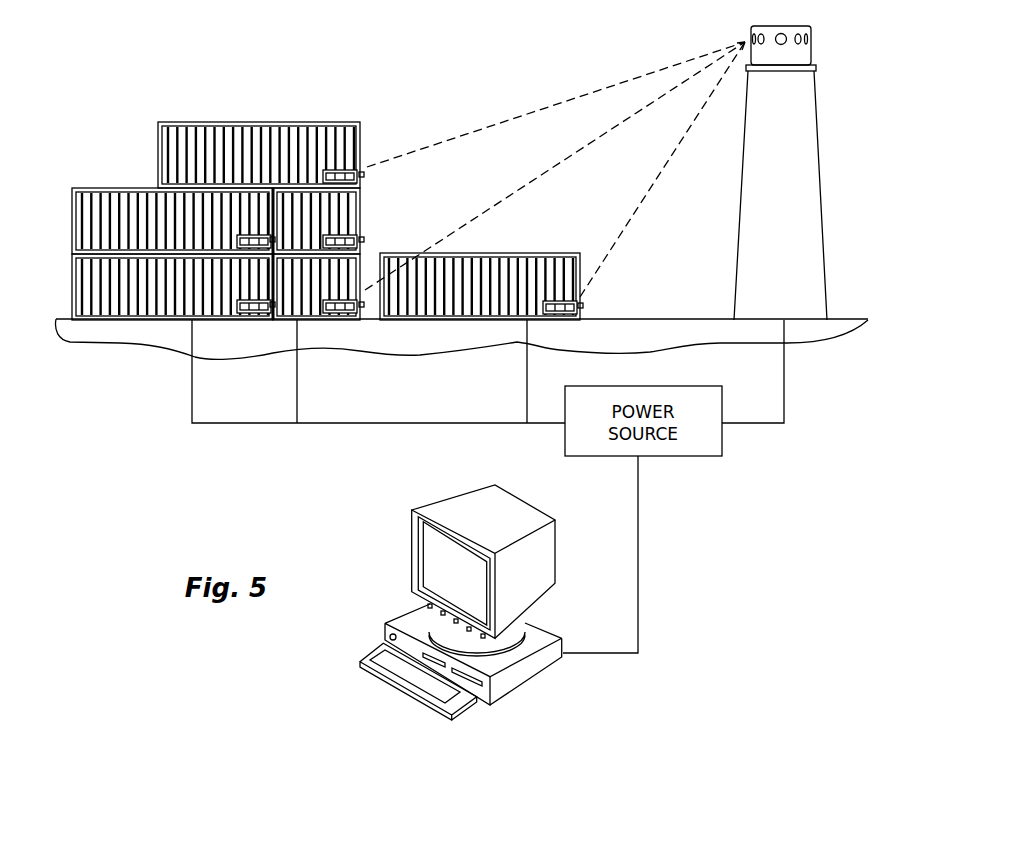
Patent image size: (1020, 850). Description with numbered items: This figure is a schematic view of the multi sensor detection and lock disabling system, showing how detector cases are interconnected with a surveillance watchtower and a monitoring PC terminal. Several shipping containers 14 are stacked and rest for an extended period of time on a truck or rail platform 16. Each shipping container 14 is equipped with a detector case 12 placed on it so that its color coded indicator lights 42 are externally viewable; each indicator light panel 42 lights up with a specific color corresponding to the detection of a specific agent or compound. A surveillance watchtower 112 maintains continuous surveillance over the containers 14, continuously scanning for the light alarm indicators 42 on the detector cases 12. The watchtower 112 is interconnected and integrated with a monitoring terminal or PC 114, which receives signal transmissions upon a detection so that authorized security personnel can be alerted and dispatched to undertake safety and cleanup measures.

The detector case 12 is at (322, 170).
The shipping container 14 is at (193, 123).
The platform 16 is at (63, 317).
The color coded indicator lights 42 is at (361, 181).
The surveillance watchtower 112 is at (825, 183).
The monitoring terminal or PC 114 is at (412, 543).